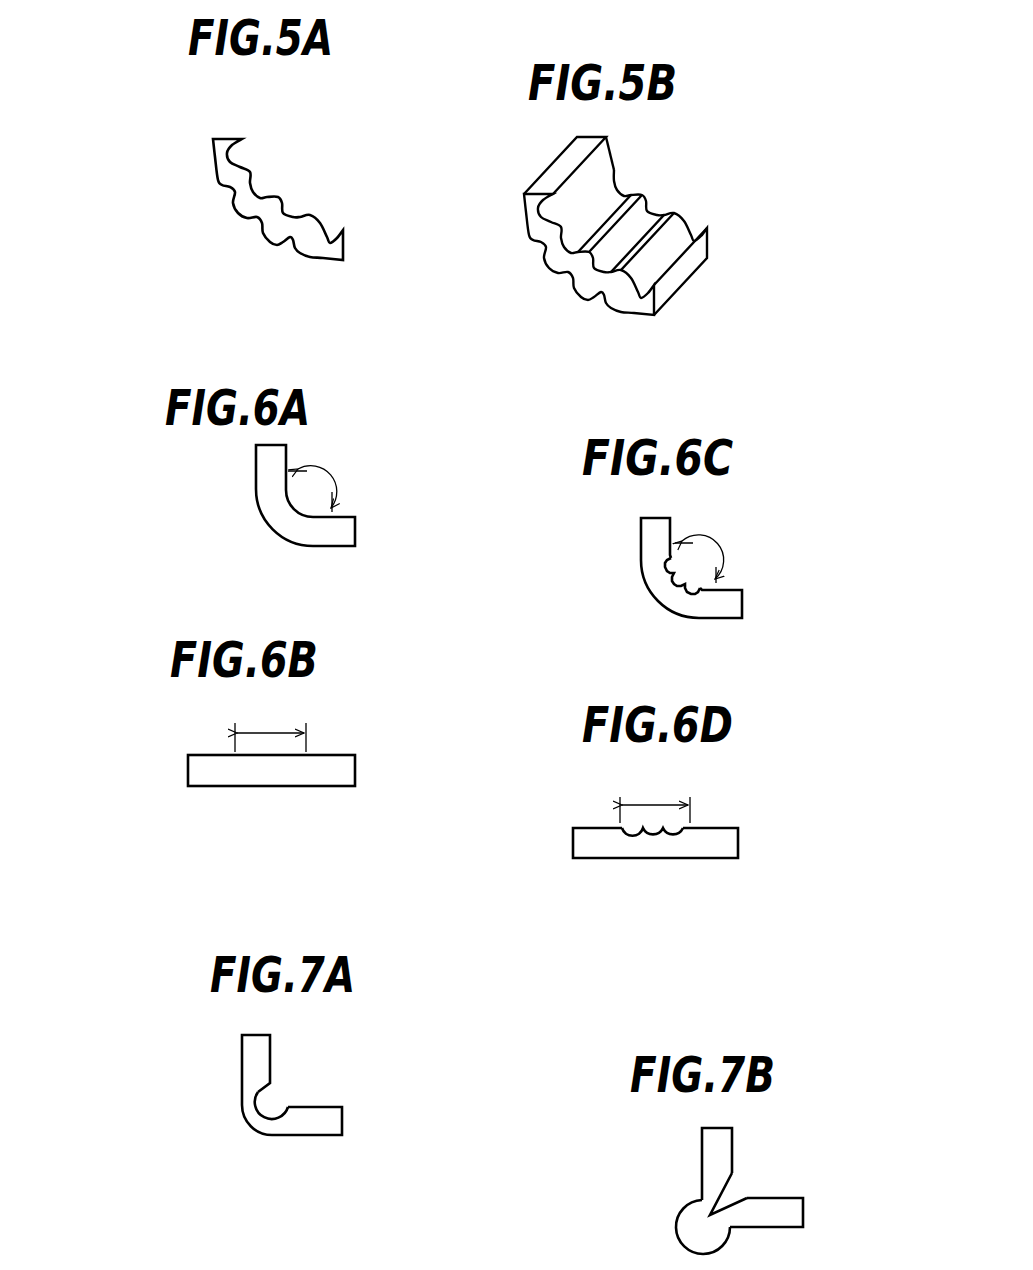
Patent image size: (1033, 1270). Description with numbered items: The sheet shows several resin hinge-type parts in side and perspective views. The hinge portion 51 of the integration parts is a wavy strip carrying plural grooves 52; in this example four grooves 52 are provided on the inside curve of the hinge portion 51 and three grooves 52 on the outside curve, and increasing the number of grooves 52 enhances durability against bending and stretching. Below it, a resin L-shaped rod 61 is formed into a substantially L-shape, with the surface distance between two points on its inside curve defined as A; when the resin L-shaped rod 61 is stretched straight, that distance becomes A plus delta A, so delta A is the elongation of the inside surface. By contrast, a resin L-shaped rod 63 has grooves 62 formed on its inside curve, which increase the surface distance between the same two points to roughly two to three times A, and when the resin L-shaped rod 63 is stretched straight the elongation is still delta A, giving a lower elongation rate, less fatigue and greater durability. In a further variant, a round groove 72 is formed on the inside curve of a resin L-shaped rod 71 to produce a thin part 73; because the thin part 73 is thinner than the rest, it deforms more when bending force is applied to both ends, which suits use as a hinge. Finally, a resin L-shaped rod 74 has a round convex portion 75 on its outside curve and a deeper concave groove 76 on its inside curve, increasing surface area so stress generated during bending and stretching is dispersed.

In FIG. 5A, the hinge portion 51 is at (233, 138).
In FIG. 5B, the hinge portion 51 is at (643, 210).
In FIG. 5A, the groove 52 is at (240, 152).
In FIG. 5B, the groove 52 is at (688, 227).
In FIG. 6A, the resin L-shaped rod 61 is at (255, 483).
In FIG. 6B, the resin L-shaped rod 61 is at (245, 787).
In FIG. 6C, the groove 62 is at (700, 598).
In FIG. 6D, the groove 62 is at (683, 835).
In FIG. 6C, the resin L-shaped rod 63 is at (640, 539).
In FIG. 6D, the resin L-shaped rod 63 is at (602, 860).
In FIG. 7A, the resin L-shaped rod 71 is at (240, 1053).
In FIG. 7A, the round groove 72 is at (273, 1097).
In FIG. 7A, the thin part 73 is at (245, 1120).
In FIG. 7B, the resin L-shaped rod 74 is at (702, 1150).
In FIG. 7B, the round convex portion 75 is at (675, 1220).
In FIG. 7B, the groove 76 is at (733, 1187).